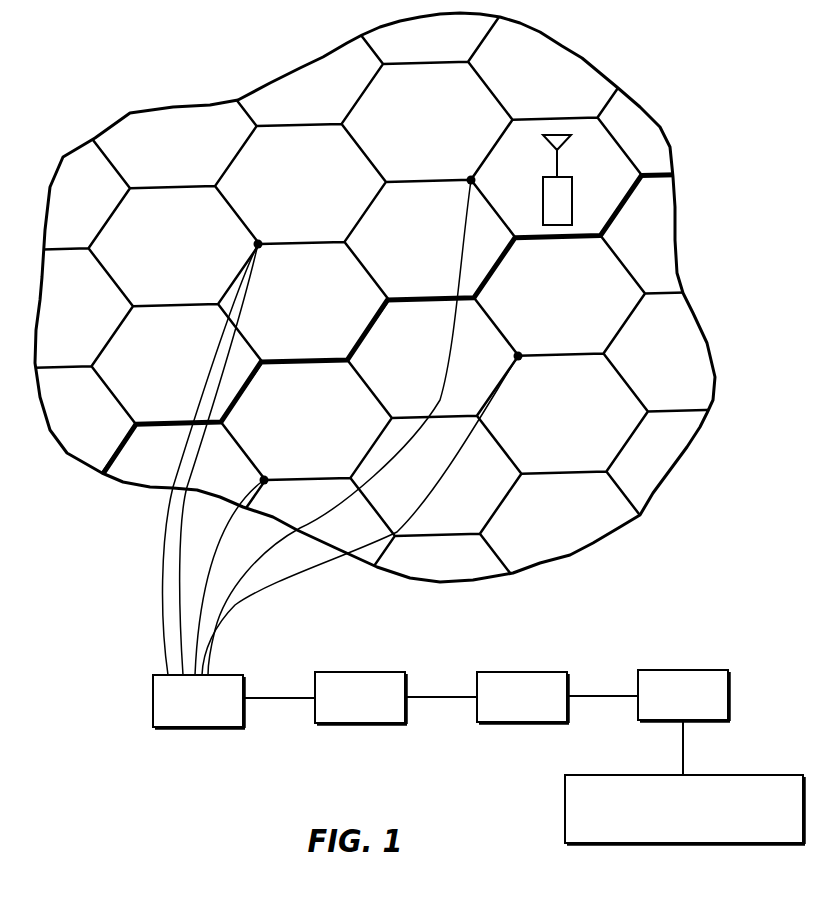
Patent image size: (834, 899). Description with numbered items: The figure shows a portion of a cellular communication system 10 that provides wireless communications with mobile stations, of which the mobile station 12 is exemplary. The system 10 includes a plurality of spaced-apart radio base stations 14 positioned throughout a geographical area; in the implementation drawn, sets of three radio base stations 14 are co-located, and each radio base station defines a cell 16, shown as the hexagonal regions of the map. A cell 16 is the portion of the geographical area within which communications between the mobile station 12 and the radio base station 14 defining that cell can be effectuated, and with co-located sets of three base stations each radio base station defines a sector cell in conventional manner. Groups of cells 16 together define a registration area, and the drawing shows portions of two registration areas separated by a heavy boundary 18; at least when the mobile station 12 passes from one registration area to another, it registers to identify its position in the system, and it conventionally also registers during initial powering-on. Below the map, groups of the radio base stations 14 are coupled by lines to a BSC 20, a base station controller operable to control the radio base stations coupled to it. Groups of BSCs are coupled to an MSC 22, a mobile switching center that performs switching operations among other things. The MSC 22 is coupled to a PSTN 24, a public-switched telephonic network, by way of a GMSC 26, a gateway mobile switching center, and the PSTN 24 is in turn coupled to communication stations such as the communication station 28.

The cellular communication system 10 is at (786, 240).
The mobile station 12 is at (573, 199).
The radio base station 14 is at (389, 326).
The cell 16 is at (189, 163).
The boundary 18 is at (662, 176).
The BSC (base station controller) 20 is at (231, 655).
The MSC (mobile switching center) 22 is at (388, 655).
The PSTN (public-switched telephonic network) 24 is at (702, 669).
The GMSC (gateway mobile switching center) 26 is at (543, 671).
The communication station 28 is at (786, 775).